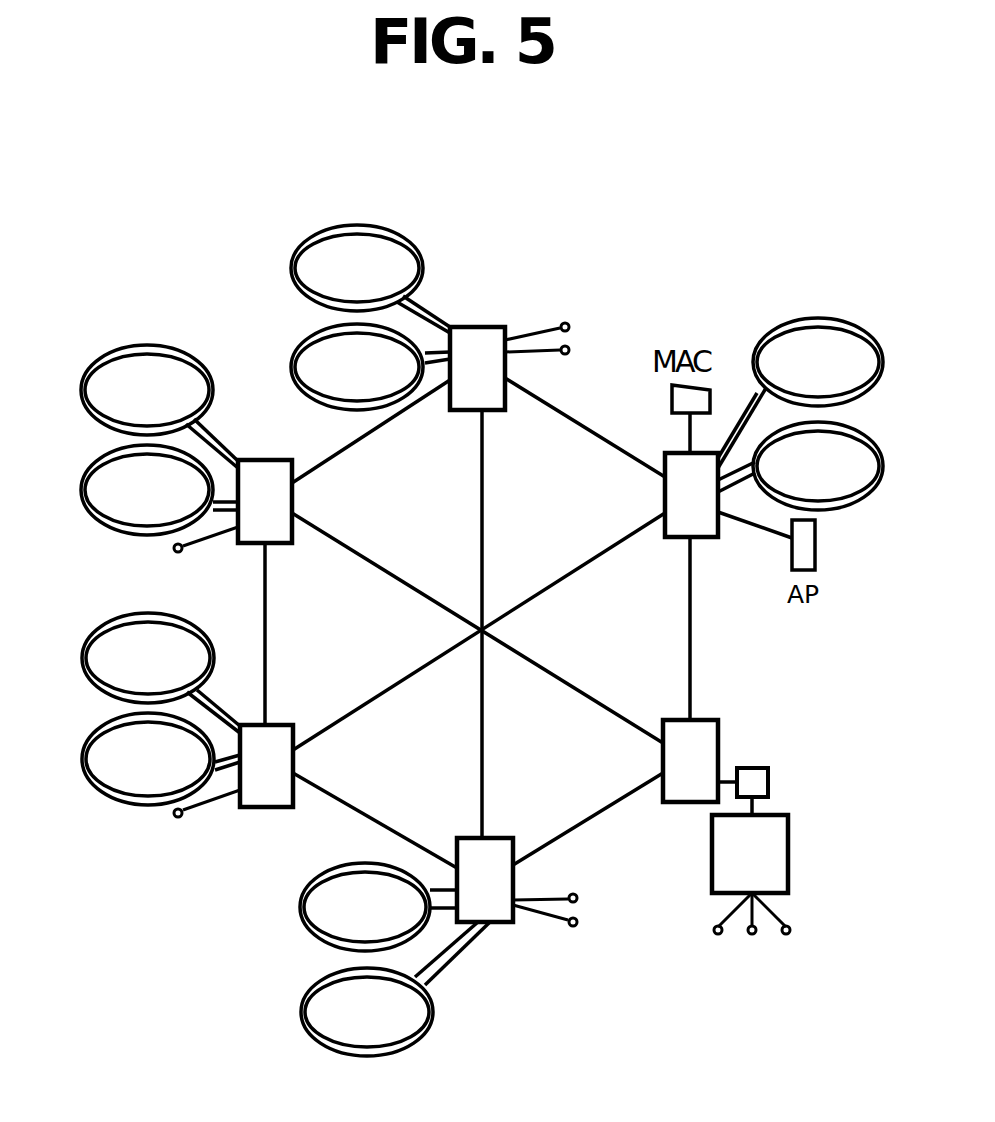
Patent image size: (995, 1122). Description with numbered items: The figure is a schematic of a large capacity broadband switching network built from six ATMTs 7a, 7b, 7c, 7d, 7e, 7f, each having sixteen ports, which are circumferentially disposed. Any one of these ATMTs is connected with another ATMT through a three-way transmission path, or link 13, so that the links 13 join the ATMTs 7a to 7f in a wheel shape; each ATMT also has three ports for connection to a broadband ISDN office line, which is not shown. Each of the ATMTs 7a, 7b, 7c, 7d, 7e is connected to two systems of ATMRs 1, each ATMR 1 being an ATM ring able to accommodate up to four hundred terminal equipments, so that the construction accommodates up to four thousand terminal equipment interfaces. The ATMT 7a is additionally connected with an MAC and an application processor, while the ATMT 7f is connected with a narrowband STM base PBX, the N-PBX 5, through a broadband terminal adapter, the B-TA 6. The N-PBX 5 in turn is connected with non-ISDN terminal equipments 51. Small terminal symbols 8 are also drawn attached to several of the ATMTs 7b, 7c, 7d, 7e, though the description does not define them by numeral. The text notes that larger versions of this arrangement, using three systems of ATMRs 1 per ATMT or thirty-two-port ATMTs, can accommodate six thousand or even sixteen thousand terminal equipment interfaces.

The ATMR 1 is at (292, 362).
The ATMT 7a is at (700, 453).
The ATMT 7b is at (507, 330).
The ATMT 7c is at (267, 460).
The ATMT 7d is at (260, 725).
The ATMT 7e is at (493, 922).
The ATMT 7f is at (697, 720).
The terminal 8 is at (567, 323).
The three-way transmission path (link) 13 is at (690, 590).
The terminal adapter (B-TA) 6 is at (768, 783).
The STM base PBX (N-PBX) 5 is at (788, 862).
The non-ISDN terminal equipments 51 is at (786, 934).